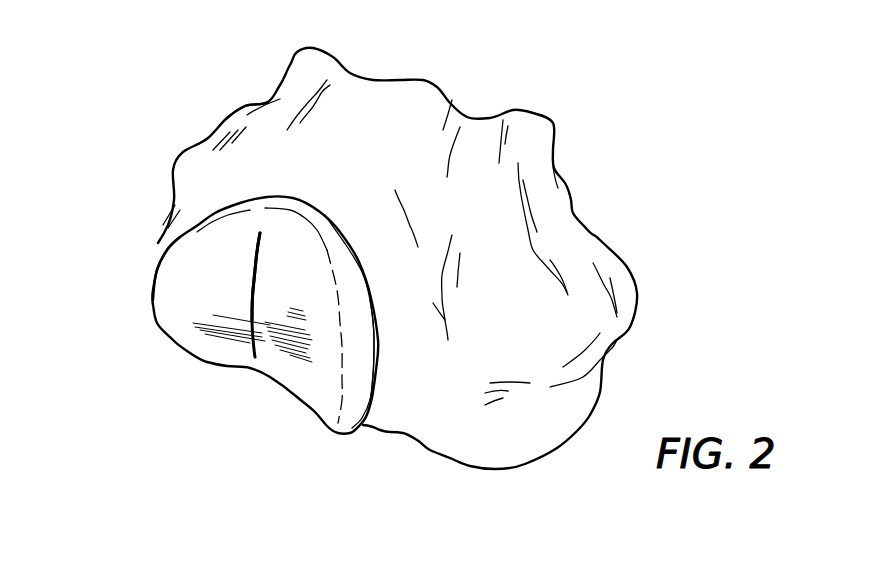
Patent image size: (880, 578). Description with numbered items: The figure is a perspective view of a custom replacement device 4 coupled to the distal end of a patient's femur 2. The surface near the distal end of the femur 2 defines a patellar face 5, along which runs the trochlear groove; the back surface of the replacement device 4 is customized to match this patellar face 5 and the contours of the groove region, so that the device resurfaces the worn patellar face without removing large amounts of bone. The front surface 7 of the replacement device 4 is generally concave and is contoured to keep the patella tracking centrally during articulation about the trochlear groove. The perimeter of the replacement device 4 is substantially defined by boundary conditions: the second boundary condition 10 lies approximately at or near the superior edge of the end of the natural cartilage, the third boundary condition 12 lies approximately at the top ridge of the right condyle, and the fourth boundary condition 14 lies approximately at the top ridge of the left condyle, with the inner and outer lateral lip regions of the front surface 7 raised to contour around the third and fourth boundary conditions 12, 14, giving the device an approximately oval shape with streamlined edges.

The femur 2 is at (512, 428).
The custom replacement device 4 is at (150, 335).
The patellar face 5 is at (308, 196).
The front surface 7 is at (251, 306).
The second boundary condition 10 is at (290, 190).
The third boundary condition 12 is at (152, 299).
The fourth boundary condition 14 is at (362, 367).